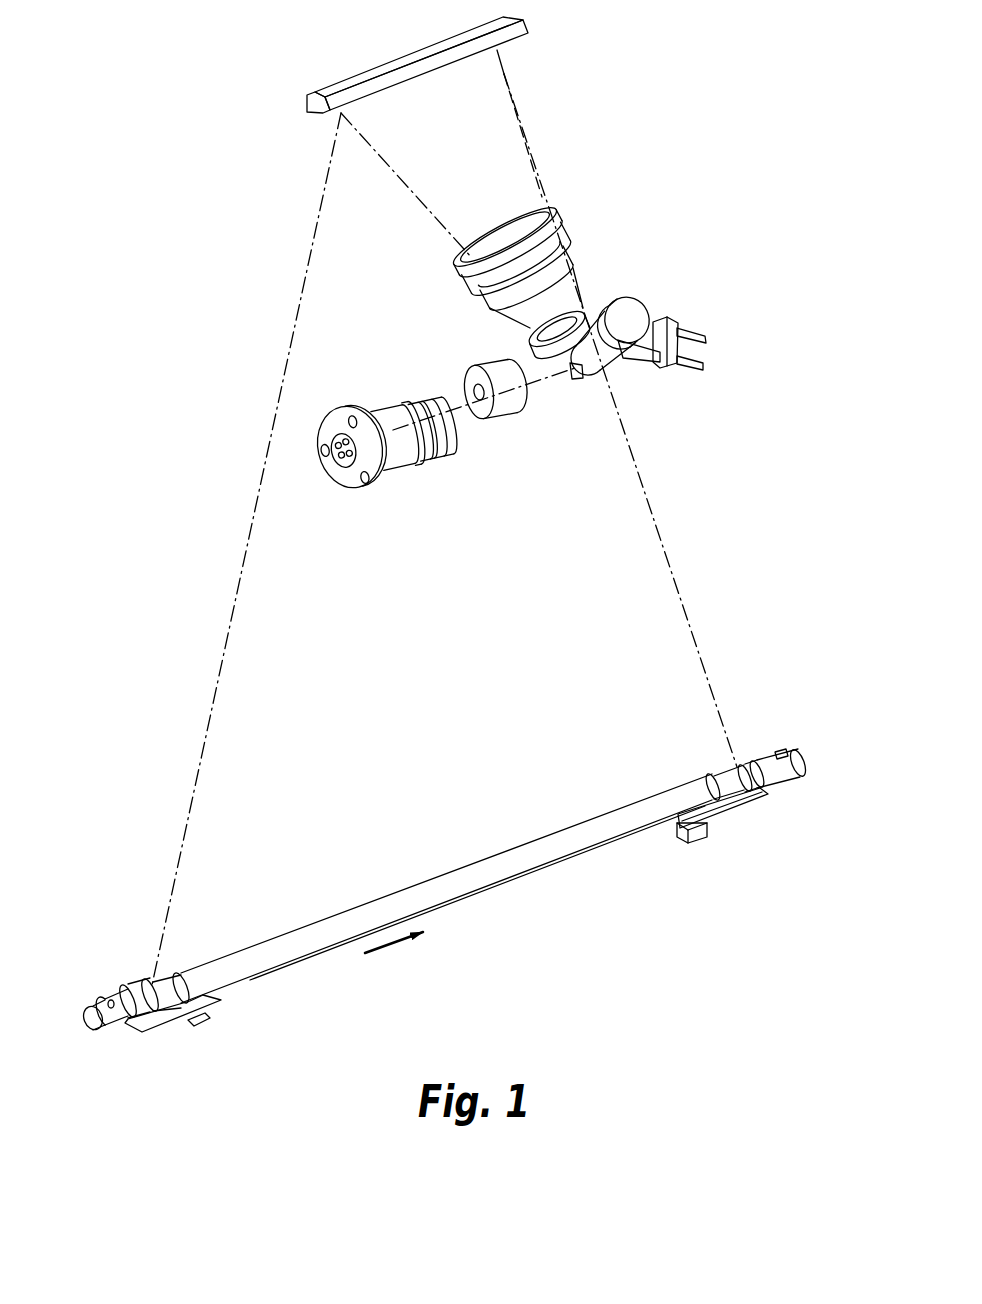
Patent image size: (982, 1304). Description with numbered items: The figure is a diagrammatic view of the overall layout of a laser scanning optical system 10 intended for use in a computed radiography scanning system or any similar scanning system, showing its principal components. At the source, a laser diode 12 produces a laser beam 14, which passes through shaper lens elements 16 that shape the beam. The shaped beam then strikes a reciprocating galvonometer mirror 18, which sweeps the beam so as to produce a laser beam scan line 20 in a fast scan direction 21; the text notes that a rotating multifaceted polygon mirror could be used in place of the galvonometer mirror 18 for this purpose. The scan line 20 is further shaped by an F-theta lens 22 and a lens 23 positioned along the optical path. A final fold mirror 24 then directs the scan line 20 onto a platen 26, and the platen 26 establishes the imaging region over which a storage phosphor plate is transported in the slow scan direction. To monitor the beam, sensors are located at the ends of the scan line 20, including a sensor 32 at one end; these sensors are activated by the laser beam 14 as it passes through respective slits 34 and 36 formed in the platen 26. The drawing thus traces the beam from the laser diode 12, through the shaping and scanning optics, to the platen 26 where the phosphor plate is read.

The laser scanning optical system 10 is at (158, 447).
The laser diode 12 is at (320, 485).
The laser beam 14 is at (556, 385).
The shaper lens elements 16 is at (492, 442).
The reciprocating galvonometer mirror 18 is at (673, 313).
The laser beam scan line 20 is at (270, 398).
The fast scan direction 21 is at (378, 951).
The F-theta lens 22 is at (568, 230).
The lens 23 is at (583, 310).
The final fold mirror 24 is at (340, 78).
The platen 26 is at (793, 747).
The sensor 32 is at (728, 817).
The slit 34 is at (130, 990).
The slit 36 is at (672, 787).